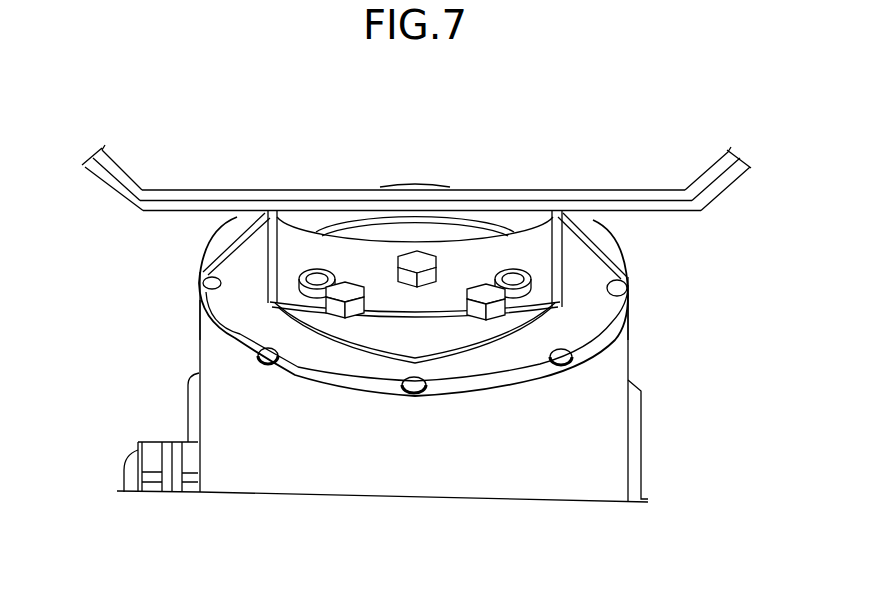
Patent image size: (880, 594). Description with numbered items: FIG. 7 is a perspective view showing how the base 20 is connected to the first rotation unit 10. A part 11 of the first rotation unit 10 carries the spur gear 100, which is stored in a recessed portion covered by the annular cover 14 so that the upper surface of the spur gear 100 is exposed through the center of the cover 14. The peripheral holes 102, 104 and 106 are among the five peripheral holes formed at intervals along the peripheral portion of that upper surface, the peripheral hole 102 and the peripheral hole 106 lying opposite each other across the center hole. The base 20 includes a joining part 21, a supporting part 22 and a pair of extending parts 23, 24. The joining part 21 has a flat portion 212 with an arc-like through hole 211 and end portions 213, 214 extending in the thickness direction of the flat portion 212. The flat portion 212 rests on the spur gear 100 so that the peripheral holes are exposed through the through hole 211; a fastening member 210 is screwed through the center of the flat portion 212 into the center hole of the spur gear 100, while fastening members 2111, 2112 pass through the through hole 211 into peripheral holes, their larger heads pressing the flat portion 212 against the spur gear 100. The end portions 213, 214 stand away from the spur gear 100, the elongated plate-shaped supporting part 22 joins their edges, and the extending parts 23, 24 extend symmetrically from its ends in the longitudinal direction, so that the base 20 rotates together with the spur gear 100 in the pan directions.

The first rotation unit 10 is at (413, 387).
The housing 11 is at (215, 403).
The cover 14 is at (237, 248).
The base 20 is at (415, 155).
The joining part 21 is at (628, 273).
The supporting part 22 is at (477, 192).
The extending part 23 is at (730, 184).
The extending part 24 is at (103, 180).
The spur gear 100 is at (388, 226).
The peripheral hole 102 is at (314, 270).
The peripheral hole 104 is at (411, 316).
The peripheral hole 106 is at (512, 272).
The fastening member 210 is at (420, 253).
The through hole 211 is at (367, 316).
The flat portion 212 is at (443, 298).
The end portion 213 is at (576, 228).
The end portion 214 is at (258, 222).
The fastening member 2111 is at (272, 301).
The fastening member 2112 is at (630, 322).